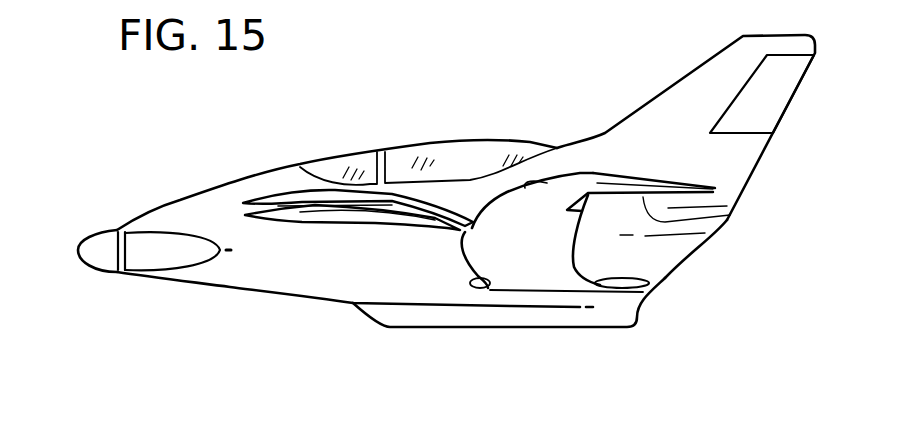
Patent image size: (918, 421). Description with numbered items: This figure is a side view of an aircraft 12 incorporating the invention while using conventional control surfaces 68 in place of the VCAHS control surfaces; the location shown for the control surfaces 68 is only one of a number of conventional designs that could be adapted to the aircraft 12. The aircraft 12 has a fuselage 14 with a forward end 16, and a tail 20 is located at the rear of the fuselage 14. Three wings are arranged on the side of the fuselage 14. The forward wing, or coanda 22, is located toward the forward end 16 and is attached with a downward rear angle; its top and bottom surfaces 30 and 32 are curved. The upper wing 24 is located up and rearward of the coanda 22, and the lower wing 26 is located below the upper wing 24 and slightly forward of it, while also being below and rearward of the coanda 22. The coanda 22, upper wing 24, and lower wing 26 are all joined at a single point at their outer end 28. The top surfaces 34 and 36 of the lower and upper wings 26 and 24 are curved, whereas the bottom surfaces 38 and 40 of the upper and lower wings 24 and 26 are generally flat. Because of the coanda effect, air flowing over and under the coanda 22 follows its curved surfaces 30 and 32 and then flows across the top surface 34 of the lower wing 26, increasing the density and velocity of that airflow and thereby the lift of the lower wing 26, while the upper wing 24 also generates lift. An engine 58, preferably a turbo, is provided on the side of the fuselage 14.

The aircraft 12 is at (140, 122).
The fuselage 14 is at (303, 257).
The forward end 16 is at (82, 250).
The tail 20 is at (718, 67).
The coanda 22 is at (270, 221).
The upper wing 24 is at (520, 183).
The lower wing 26 is at (643, 298).
The outer end 28 is at (513, 247).
The top surface of the coanda 30 is at (360, 197).
The bottom surface of the coanda 32 is at (380, 221).
The top surface of the lower wing 34 is at (613, 270).
The top surface of the upper wing 36 is at (594, 176).
The bottom surface of the upper wing 38 is at (730, 215).
The bottom surface of the lower wing 40 is at (550, 291).
The engine 58 is at (143, 256).
The conventional control surfaces 68 is at (772, 93).